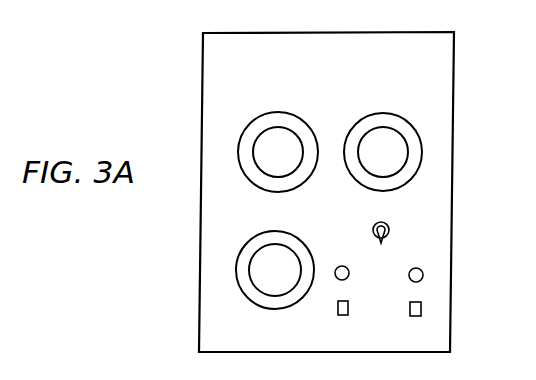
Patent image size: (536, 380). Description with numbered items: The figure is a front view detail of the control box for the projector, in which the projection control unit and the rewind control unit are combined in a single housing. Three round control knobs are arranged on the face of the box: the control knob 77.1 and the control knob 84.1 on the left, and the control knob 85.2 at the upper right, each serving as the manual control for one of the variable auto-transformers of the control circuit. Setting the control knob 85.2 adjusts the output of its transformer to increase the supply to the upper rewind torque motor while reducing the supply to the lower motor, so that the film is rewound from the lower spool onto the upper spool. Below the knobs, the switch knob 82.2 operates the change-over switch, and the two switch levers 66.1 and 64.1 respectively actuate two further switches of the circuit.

The control knob 77.1 is at (250, 180).
The control knob 85.2 is at (383, 113).
The control knob 84.1 is at (268, 308).
The switch knob 82.2 is at (389, 228).
The switch lever 66.1 is at (343, 317).
The switch lever 64.1 is at (421, 305).